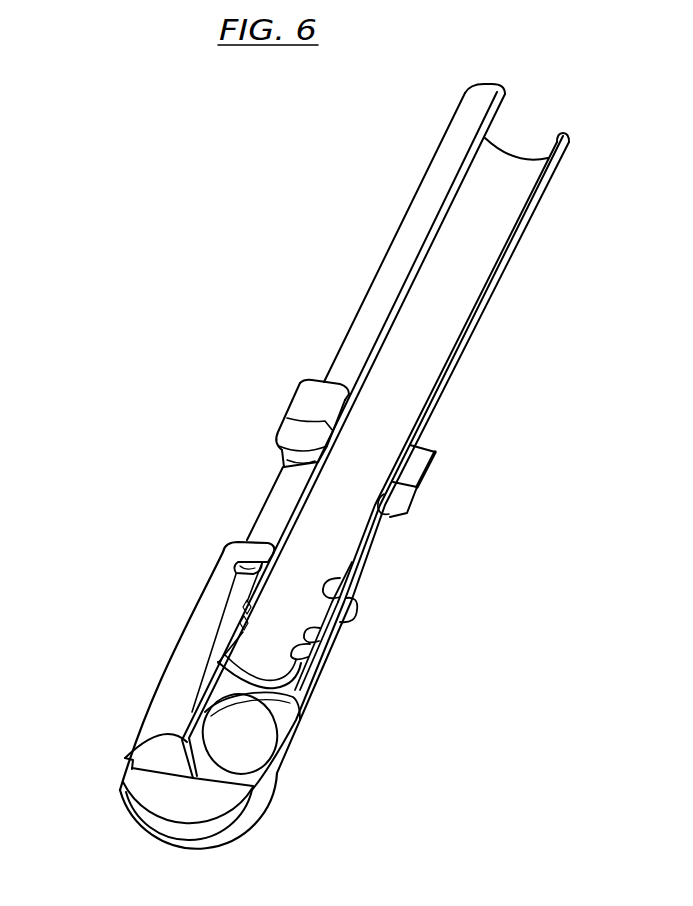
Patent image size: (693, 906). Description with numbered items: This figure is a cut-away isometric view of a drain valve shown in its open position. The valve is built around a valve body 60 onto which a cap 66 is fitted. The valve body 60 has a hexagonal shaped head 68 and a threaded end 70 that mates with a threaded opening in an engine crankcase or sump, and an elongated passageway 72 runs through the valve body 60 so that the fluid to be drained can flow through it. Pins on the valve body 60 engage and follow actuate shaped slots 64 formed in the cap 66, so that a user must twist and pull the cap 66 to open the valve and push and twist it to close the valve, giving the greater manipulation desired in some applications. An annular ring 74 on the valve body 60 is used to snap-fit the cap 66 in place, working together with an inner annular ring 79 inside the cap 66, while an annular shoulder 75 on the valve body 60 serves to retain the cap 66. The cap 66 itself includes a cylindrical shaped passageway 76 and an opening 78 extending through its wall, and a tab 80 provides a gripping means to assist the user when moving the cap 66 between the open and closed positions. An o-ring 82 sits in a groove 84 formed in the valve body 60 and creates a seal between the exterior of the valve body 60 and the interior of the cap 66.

The valve body 60 is at (477, 325).
The actuate shaped slots 64 is at (238, 558).
The cap 66 is at (195, 618).
The hexagonal shaped head 68 is at (433, 453).
The threaded end 70 is at (430, 192).
The elongated passageway 72 is at (507, 160).
The annular ring 74 is at (282, 467).
The annular shoulder 75 is at (336, 613).
The cylindrical shaped passageway 76 is at (240, 680).
The opening 78 is at (222, 740).
The inner annular ring 79 is at (350, 580).
The tab 80 is at (147, 802).
The o-ring 82 is at (325, 633).
The groove 84 is at (297, 662).